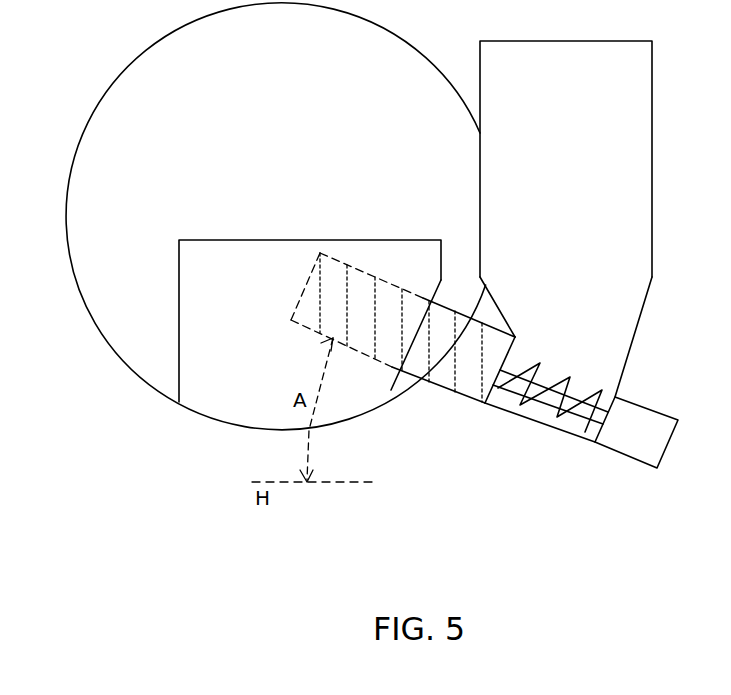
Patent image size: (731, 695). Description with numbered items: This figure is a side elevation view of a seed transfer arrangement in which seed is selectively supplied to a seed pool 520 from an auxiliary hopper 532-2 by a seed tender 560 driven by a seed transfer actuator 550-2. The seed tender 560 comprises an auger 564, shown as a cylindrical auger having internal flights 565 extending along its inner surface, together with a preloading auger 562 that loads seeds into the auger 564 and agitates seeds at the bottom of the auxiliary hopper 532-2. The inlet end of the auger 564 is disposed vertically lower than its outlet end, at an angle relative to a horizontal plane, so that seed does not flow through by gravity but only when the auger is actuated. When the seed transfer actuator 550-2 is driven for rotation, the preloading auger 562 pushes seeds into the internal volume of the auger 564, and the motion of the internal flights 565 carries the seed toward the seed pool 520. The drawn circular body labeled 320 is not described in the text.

The drum 320 is at (270, 68).
The auxiliary hopper 532-2 is at (593, 99).
The seed pool 520 is at (210, 348).
The internal flights 565 is at (317, 307).
The auger 564 is at (470, 400).
The seed tender 560 is at (529, 452).
The preloading auger 562 is at (533, 397).
The seed transfer actuator 550-2 is at (635, 402).